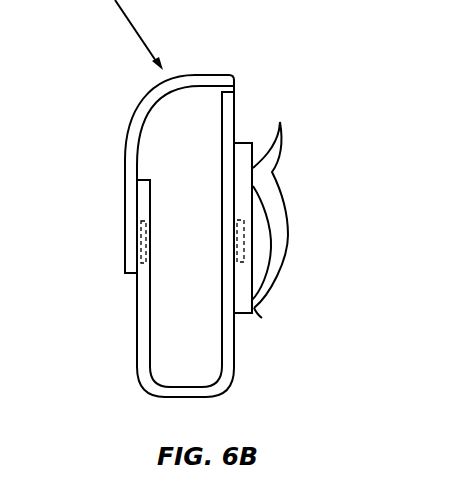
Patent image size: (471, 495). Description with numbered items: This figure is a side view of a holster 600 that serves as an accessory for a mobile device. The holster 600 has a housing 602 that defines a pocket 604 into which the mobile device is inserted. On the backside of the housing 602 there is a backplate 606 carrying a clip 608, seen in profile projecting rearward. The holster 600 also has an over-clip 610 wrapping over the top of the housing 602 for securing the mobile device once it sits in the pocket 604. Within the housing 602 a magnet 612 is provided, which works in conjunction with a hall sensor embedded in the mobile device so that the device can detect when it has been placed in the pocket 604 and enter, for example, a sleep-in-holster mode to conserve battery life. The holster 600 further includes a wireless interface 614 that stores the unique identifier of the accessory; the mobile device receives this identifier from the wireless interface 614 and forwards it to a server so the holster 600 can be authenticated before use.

The holster 600 is at (248, 76).
The housing 602 is at (140, 333).
The pocket 604 is at (203, 293).
The backplate 606 is at (251, 311).
The clip 608 is at (273, 199).
The over-clip 610 is at (130, 128).
The magnet 612 is at (134, 248).
The wireless interface 614 is at (256, 239).